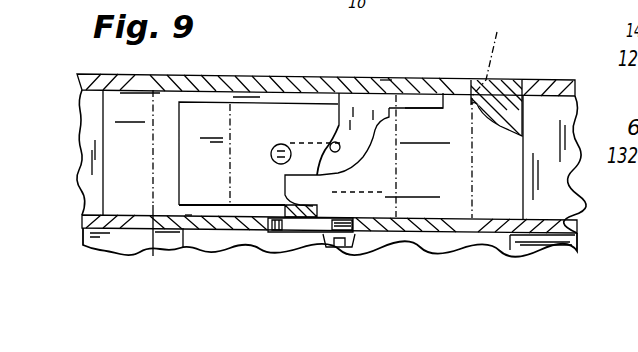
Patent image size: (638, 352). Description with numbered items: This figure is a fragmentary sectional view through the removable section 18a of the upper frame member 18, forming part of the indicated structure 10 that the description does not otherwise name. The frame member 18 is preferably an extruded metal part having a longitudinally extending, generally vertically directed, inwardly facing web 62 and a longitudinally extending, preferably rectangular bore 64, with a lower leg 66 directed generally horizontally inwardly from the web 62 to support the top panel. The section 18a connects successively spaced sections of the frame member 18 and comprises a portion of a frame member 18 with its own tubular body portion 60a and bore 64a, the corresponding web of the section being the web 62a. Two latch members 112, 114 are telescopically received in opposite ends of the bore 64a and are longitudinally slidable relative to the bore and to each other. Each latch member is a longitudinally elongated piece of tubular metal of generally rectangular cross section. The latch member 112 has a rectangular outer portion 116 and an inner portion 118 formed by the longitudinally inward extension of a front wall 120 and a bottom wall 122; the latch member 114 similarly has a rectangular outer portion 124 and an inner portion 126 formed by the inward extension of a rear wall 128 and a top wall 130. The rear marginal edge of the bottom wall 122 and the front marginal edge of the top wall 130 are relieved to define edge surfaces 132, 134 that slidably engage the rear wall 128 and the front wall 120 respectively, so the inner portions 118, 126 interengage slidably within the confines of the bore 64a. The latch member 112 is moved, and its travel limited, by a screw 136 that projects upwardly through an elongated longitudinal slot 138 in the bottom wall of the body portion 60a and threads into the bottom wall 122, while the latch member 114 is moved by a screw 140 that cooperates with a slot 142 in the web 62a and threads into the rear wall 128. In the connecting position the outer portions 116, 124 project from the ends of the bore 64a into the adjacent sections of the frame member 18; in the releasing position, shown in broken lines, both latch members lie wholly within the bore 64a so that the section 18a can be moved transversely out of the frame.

The lock assembly 10 is at (330, 15).
The upper frame member 18 is at (92, 73).
The removable section of the frame member 18a is at (303, 77).
The tubular body portion 60a is at (380, 80).
The web 62 is at (132, 203).
The web 62a is at (416, 246).
The bore 64 is at (85, 113).
The bore 64a is at (207, 153).
The lower leg 66 is at (575, 248).
The latch member 112 is at (147, 128).
The latch member 114 is at (468, 270).
The outer portion 116 is at (117, 193).
The inner portion 118 is at (205, 117).
The front wall 120 is at (238, 93).
The bottom wall 122 is at (223, 186).
The outer portion 124 is at (483, 110).
The inner portion 126 is at (402, 120).
The rear wall 128 is at (298, 221).
The top wall 130 is at (385, 168).
The edge surface 132 is at (240, 207).
The edge surface 134 is at (423, 106).
The screw 136 is at (277, 146).
The slot 138 is at (333, 145).
The screw 140 is at (353, 249).
The slot 142 is at (292, 218).